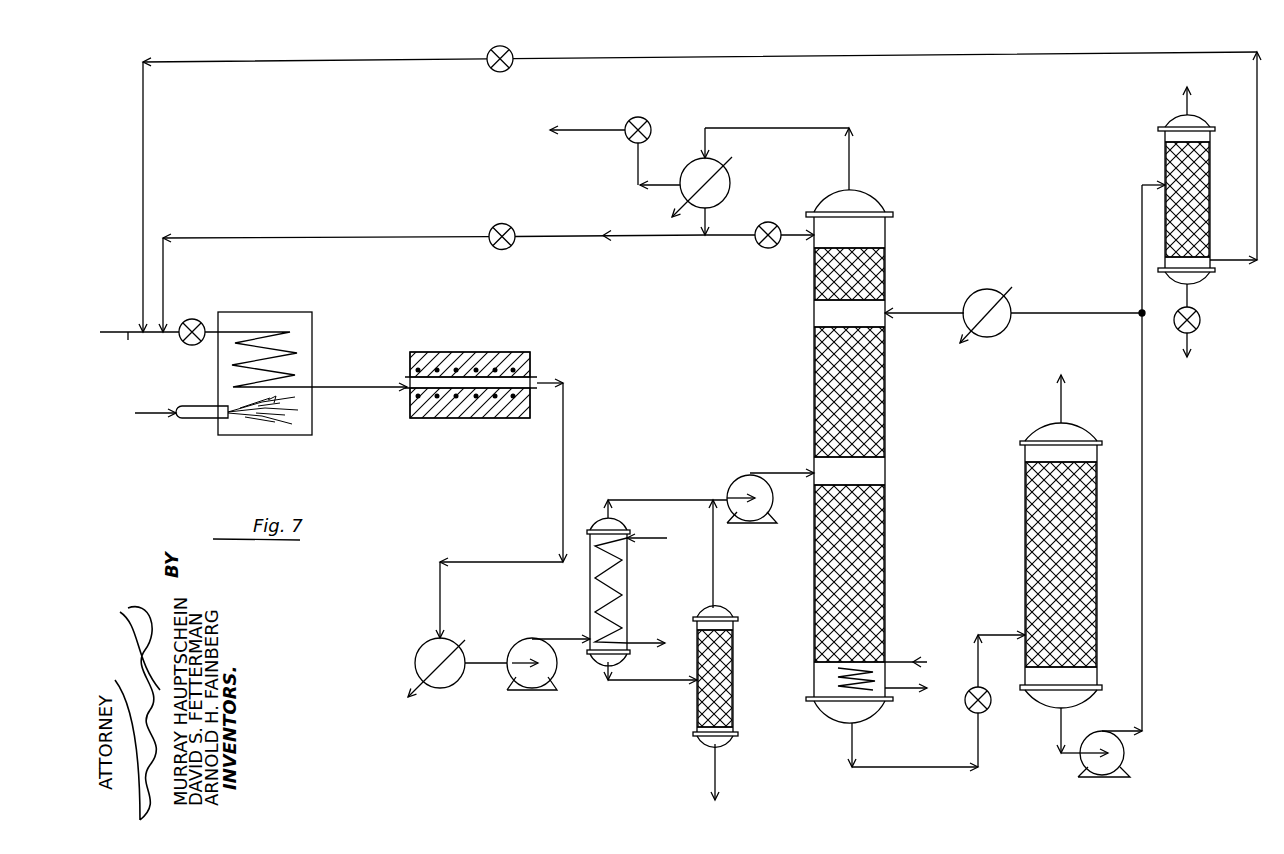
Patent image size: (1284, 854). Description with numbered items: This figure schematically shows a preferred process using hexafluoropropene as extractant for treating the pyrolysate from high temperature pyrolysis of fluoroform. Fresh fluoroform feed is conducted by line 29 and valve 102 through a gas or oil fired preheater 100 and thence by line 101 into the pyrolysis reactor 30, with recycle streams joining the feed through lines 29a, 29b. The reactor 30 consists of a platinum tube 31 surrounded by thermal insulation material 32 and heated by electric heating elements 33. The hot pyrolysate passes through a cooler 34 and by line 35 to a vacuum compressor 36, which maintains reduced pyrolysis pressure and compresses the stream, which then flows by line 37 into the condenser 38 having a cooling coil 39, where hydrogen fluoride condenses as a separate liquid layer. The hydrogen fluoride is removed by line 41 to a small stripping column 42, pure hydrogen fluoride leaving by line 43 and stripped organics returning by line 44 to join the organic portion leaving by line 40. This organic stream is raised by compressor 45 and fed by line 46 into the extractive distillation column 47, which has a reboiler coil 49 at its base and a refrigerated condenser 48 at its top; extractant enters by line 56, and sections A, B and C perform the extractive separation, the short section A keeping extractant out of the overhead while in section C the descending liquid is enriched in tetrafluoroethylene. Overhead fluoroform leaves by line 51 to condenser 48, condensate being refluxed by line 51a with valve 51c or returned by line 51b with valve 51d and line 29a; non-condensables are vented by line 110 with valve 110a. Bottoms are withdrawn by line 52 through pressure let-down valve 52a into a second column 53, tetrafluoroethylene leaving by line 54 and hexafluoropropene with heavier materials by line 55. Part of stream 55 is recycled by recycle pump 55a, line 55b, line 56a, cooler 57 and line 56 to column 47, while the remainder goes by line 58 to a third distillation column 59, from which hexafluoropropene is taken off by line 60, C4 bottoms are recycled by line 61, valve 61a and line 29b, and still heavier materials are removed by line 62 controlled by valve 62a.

The line 29 is at (159, 353).
The line 29a is at (163, 292).
The line 29b is at (143, 222).
The pyrolysis reactor 30 is at (474, 378).
The tube 31 is at (540, 375).
The thermal insulation material 32 is at (498, 356).
The electric heating elements 33 is at (420, 398).
The cooler 34 is at (430, 657).
The line 35 is at (484, 668).
The vacuum compressor 36 is at (523, 650).
The line 37 is at (577, 637).
The condenser 38 is at (629, 592).
The cooling coil 39 is at (622, 565).
The line 40 is at (655, 498).
The line 41 is at (635, 683).
The stripping column 42 is at (722, 680).
The line 43 is at (718, 765).
The line 44 is at (715, 572).
The compressor 45 is at (747, 480).
The line 46 is at (795, 470).
The extractive distillation column 47 is at (852, 456).
The refrigerated condenser 48 is at (730, 183).
The reboiler coil 49 is at (905, 658).
The line 51 is at (849, 150).
The line 51a is at (740, 240).
The line 51b is at (570, 238).
The valve 51c is at (772, 222).
The valve 51d is at (507, 226).
The line 52 is at (885, 768).
The pressure let-down valve 52a is at (965, 710).
The second column 53 is at (1025, 548).
The line 54 is at (1059, 403).
The line 55 is at (1058, 742).
The recycle pump 55a is at (1120, 757).
The line 55b is at (1142, 712).
The line 56 is at (893, 310).
The line 56a is at (1045, 310).
The cooler 57 is at (983, 300).
The line 58 is at (1142, 253).
The third distillation column 59 is at (1180, 170).
The line 60 is at (1180, 103).
The line 61 is at (1257, 210).
The valve 61a is at (487, 70).
The line 62 is at (1192, 295).
The valve 62a is at (1200, 328).
The preheater 100 is at (312, 343).
The line 101 is at (367, 388).
The valve 102 is at (190, 346).
The line 110 is at (662, 187).
The valve 110a is at (638, 117).
The section A is at (833, 283).
The section B is at (838, 380).
The section C is at (845, 598).